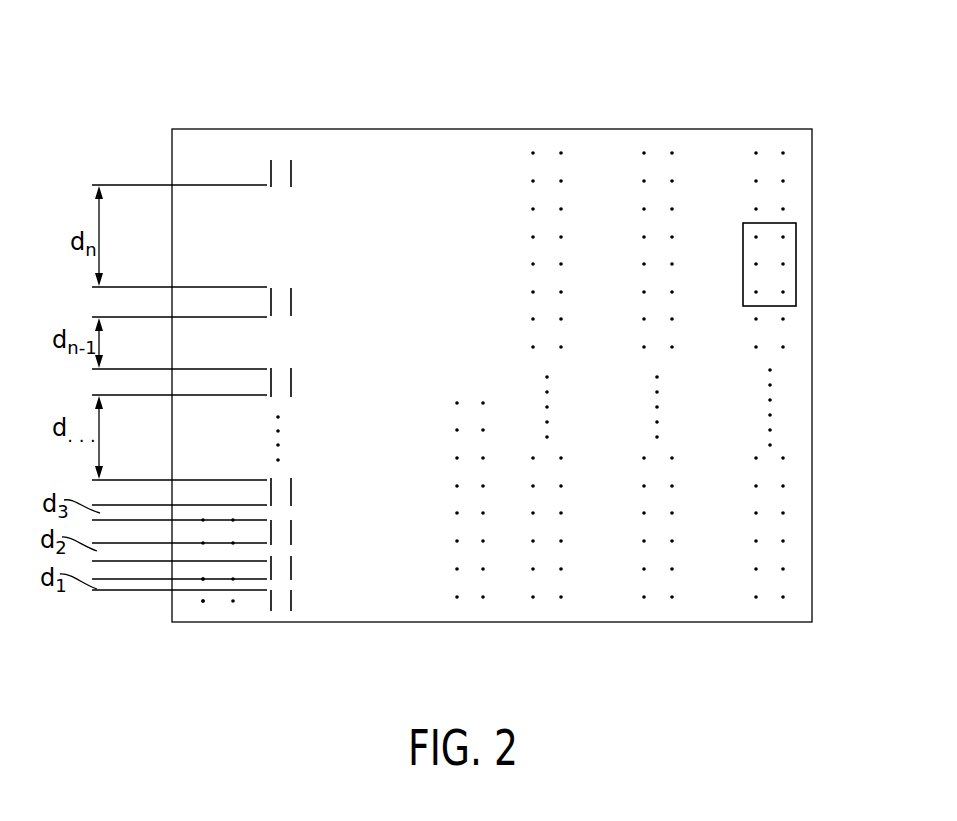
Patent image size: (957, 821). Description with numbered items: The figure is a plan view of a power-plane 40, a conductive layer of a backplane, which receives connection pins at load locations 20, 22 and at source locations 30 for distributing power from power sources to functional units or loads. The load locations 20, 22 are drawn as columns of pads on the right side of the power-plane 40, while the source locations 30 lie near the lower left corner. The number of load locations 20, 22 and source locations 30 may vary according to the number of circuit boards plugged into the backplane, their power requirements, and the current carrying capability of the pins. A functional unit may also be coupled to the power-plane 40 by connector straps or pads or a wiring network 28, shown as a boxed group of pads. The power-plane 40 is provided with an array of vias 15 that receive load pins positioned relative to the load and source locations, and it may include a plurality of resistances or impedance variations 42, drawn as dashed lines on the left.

The vias 15 is at (201, 601).
The load locations 20 is at (770, 604).
The load locations 22 is at (770, 131).
The wiring network 28 is at (796, 246).
The source locations 30 is at (217, 605).
The power-plane 40 is at (240, 93).
The impedance variations 42 is at (282, 605).